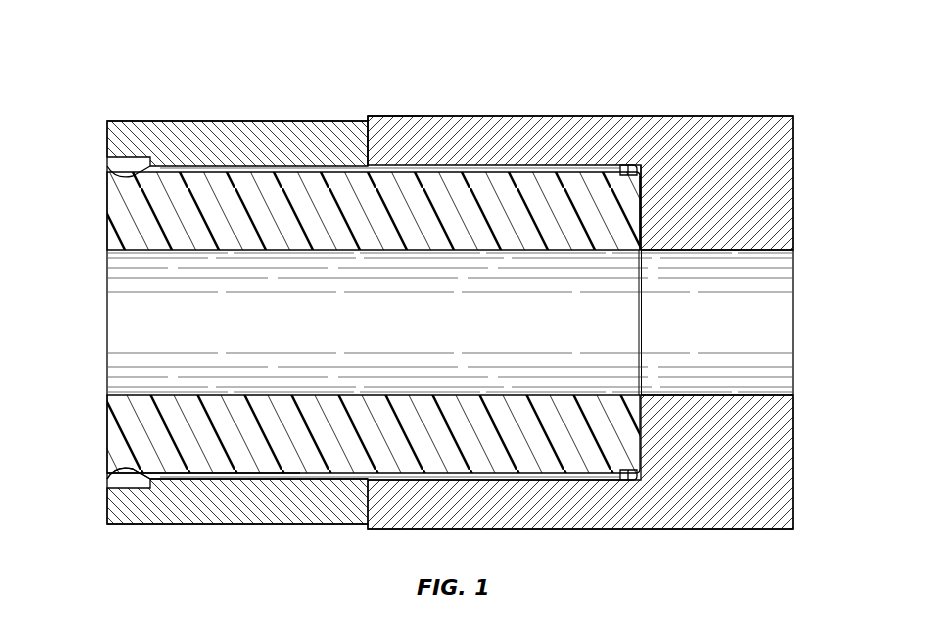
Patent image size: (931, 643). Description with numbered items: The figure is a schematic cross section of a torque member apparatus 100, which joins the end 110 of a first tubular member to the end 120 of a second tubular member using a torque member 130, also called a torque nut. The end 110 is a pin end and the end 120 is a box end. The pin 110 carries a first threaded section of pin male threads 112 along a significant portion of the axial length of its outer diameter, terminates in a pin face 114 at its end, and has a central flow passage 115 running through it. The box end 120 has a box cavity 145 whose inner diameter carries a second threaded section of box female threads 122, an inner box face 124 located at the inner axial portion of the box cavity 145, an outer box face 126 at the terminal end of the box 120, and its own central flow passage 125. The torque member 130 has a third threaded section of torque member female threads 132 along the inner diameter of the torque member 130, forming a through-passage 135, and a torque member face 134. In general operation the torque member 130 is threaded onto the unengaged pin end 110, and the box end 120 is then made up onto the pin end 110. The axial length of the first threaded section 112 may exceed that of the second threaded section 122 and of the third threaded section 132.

The torque member apparatus 100 is at (136, 66).
The end of first tubular member 110 is at (115, 218).
The pin male threads 112 is at (158, 473).
The pin face 114 is at (637, 226).
The central flow passage 115 is at (158, 392).
The end of second tubular member 120 is at (772, 166).
The box female threads 122 is at (512, 481).
The inner box face 124 is at (645, 208).
The central flow passage 125 is at (740, 392).
The outer box face 126 is at (372, 121).
The torque member 130 is at (215, 125).
The torque member female threads 132 is at (272, 477).
The torque member face 134 is at (362, 128).
The through-passage 135 is at (130, 487).
The box cavity 145 is at (627, 165).